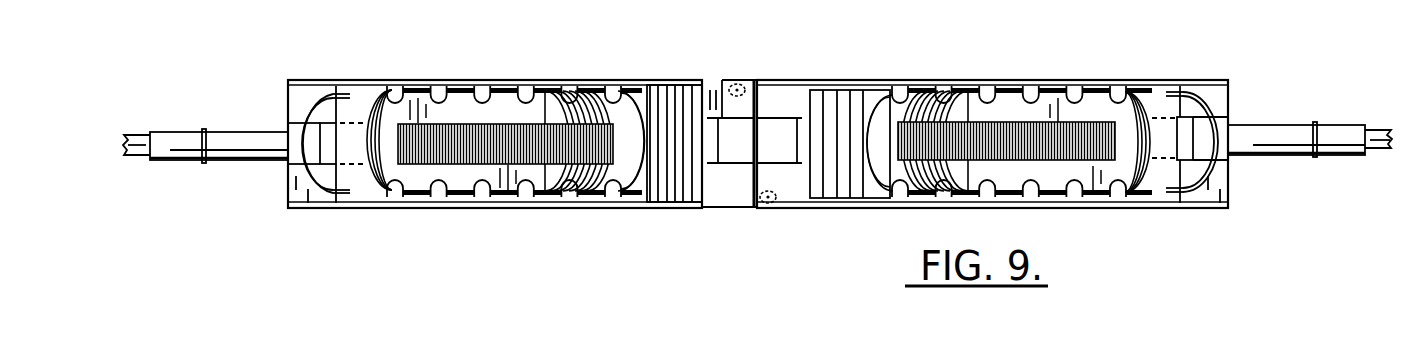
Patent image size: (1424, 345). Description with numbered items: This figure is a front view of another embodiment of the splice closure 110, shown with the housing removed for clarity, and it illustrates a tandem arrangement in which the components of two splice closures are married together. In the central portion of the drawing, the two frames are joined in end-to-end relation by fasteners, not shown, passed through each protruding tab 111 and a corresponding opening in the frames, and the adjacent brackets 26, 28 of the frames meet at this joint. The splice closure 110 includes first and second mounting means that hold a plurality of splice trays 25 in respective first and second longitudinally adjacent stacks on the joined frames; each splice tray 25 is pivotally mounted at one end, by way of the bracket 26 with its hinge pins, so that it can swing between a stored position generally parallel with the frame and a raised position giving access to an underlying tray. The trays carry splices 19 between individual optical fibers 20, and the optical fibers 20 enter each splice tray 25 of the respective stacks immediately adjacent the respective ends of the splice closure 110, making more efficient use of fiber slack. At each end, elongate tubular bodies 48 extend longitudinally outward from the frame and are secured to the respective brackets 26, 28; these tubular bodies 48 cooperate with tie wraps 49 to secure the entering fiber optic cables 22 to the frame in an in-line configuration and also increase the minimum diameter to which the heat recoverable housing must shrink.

The splice closure 110 is at (632, 62).
The splices 19 is at (582, 148).
The optical fibers 20 is at (372, 105).
The fiber optic cables 22 is at (135, 133).
The splice trays 25 is at (697, 190).
The bracket 26 is at (312, 133).
The second bracket 28 is at (730, 132).
The elongate tubular bodies 48 is at (245, 142).
The tie wraps 49 is at (204, 128).
The protruding tab 111 is at (742, 80).